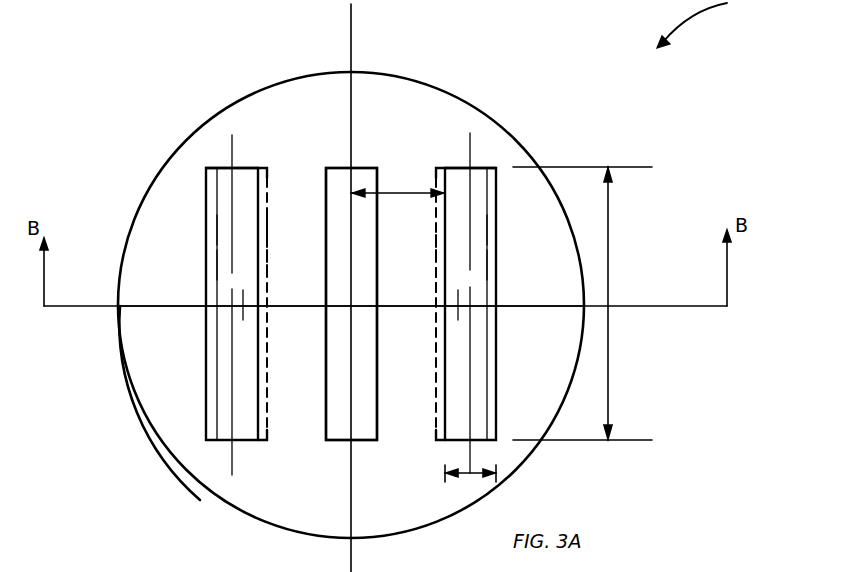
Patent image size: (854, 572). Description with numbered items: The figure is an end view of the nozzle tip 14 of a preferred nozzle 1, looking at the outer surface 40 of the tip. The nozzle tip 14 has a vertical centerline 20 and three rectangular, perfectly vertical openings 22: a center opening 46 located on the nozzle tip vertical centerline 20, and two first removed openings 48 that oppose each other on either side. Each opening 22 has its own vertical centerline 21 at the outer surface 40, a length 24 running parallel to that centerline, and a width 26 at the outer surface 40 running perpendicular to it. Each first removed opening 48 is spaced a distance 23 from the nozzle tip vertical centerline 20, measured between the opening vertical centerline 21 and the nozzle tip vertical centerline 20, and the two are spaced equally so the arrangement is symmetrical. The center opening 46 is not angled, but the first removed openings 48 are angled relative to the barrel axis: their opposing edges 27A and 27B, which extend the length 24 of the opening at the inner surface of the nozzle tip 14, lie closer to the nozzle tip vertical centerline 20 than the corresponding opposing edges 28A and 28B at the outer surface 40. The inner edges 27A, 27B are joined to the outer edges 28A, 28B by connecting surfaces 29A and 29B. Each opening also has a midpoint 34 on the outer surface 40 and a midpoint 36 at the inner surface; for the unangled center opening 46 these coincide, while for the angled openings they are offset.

The nozzle 1 is at (703, 24).
The nozzle tip 14 is at (452, 93).
The nozzle tip vertical centerline 20 is at (351, 33).
The opening vertical centerline 21 is at (232, 148).
The opening 22 is at (221, 427).
The distance 23 is at (430, 190).
The length 24 is at (608, 236).
The width 26 is at (470, 474).
The opposing edge at inner surface 27A is at (268, 197).
The opposing edge at inner surface 27B is at (218, 188).
The opposing edge at outer surface 28A is at (267, 236).
The opposing edge at outer surface 28B is at (217, 229).
The connecting surface 29A is at (268, 263).
The connecting surface 29B is at (217, 263).
The midpoint on outer surface 34 is at (233, 307).
The midpoint at inner surface 36 is at (243, 306).
The outer surface 40 is at (153, 384).
The center opening 46 is at (338, 167).
The first removed opening 48 is at (243, 168).